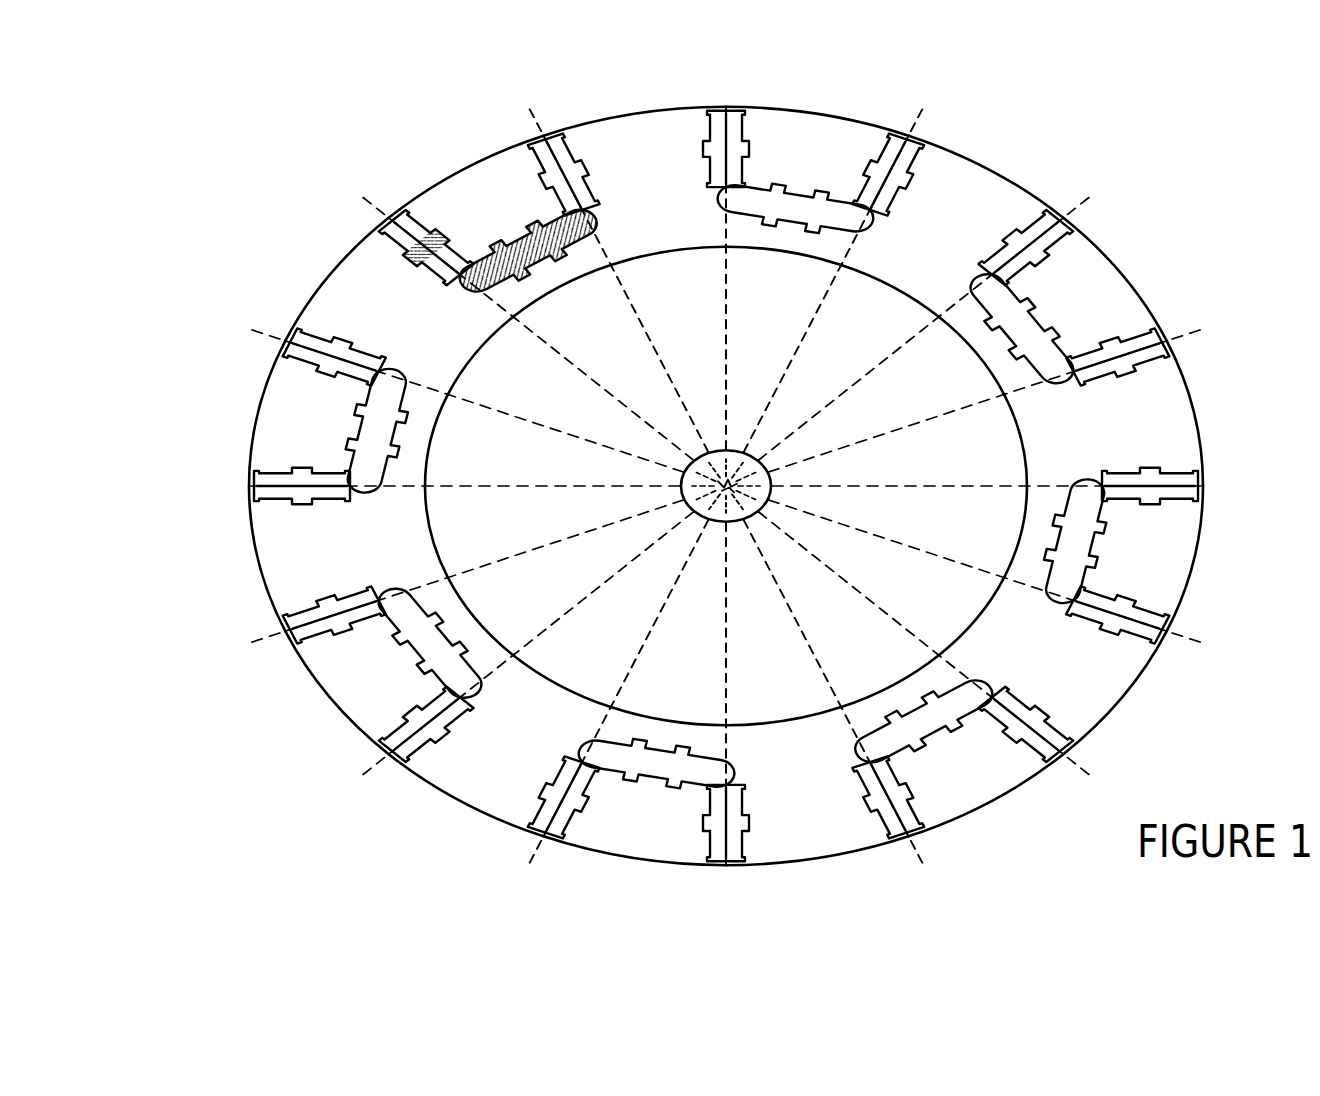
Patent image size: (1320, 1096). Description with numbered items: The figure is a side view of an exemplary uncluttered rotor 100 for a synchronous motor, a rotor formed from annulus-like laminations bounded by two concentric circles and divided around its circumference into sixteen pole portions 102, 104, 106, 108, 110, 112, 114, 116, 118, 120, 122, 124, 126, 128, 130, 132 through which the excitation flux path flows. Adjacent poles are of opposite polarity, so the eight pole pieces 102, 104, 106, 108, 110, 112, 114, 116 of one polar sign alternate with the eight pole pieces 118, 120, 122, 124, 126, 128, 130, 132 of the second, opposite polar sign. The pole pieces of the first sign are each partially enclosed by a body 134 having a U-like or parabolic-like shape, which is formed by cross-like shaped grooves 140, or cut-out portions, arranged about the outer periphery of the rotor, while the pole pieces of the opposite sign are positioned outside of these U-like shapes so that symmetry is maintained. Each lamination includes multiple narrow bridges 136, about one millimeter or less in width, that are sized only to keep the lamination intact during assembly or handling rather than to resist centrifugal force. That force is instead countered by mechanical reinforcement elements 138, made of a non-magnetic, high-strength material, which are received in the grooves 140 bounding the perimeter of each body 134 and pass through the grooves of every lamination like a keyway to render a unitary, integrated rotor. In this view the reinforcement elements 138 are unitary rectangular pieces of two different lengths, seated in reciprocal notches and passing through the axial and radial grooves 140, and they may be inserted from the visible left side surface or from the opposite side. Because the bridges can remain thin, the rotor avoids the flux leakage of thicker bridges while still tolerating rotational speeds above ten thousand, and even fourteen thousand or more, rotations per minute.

The uncluttered rotor 100 is at (1125, 71).
The pole portion 102 is at (803, 135).
The pole portion 104 is at (1098, 295).
The pole portion 106 is at (1158, 552).
The pole portion 108 is at (985, 788).
The pole portion 110 is at (623, 842).
The pole portion 112 is at (338, 678).
The pole portion 114 is at (281, 417).
The pole portion 116 is at (490, 187).
The pole portion 118 is at (968, 177).
The pole portion 120 is at (1175, 417).
The pole portion 122 is at (1085, 680).
The pole portion 124 is at (823, 840).
The pole portion 126 is at (475, 795).
The pole portion 128 is at (273, 540).
The pole portion 130 is at (337, 282).
The pole portion 132 is at (602, 128).
The body 134 is at (551, 274).
The narrow bridge 136 is at (715, 104).
The mechanical reinforcement element 138 is at (492, 250).
The groove 140 is at (582, 160).